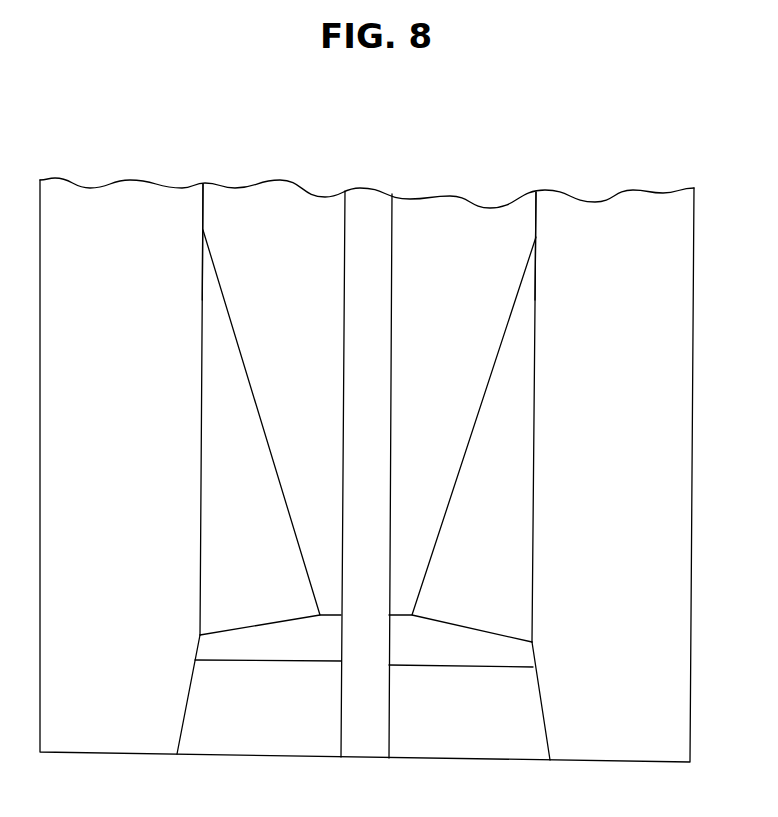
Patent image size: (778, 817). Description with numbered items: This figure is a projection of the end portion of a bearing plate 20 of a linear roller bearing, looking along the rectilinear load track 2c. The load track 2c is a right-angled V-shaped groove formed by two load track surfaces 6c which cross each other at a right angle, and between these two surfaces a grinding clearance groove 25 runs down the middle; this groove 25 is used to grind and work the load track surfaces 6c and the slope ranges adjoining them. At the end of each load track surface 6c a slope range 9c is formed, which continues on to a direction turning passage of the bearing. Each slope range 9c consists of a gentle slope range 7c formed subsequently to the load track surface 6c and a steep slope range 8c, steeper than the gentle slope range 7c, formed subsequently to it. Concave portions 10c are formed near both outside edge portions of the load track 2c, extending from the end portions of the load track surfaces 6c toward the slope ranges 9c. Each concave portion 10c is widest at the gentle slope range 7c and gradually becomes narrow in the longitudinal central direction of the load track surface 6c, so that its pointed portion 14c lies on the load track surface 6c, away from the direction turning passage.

The bearing plate 20 is at (694, 404).
The load track 2c is at (450, 197).
The grinding clearance groove 25 is at (368, 206).
The load track surface 6c is at (300, 309).
The pointed portion 14c is at (203, 262).
The concave portion 10c is at (369, 422).
The gentle slope range 7c is at (232, 645).
The steep slope range 8c is at (210, 689).
The slope range 9c is at (124, 607).